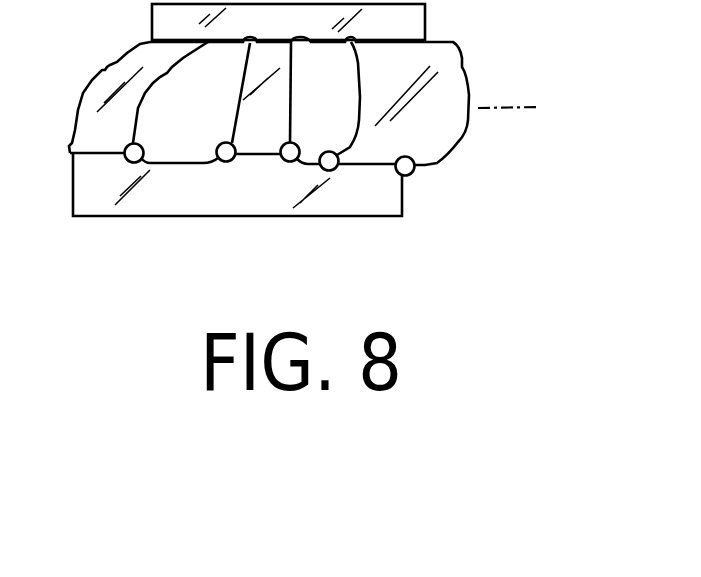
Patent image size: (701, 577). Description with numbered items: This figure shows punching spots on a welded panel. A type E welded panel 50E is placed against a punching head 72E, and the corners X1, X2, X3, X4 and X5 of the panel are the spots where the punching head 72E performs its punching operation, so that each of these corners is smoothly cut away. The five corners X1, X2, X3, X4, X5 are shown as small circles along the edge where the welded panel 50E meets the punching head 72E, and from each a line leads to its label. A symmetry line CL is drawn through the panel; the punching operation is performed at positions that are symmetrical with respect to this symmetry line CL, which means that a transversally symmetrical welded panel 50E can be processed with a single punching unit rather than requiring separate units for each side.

The type E welded panel 50E is at (473, 70).
The punching head 72E is at (413, 168).
The corner X1 is at (127, 160).
The corner X2 is at (219, 158).
The corner X3 is at (284, 159).
The corner X4 is at (336, 170).
The corner X5 is at (398, 174).
The symmetry line CL is at (533, 109).